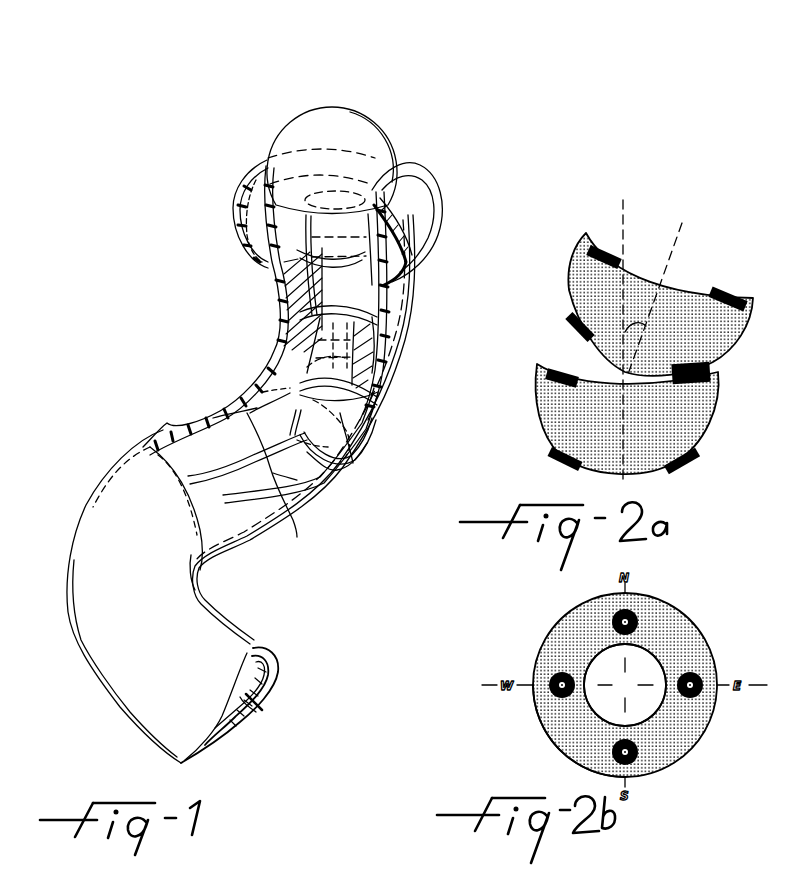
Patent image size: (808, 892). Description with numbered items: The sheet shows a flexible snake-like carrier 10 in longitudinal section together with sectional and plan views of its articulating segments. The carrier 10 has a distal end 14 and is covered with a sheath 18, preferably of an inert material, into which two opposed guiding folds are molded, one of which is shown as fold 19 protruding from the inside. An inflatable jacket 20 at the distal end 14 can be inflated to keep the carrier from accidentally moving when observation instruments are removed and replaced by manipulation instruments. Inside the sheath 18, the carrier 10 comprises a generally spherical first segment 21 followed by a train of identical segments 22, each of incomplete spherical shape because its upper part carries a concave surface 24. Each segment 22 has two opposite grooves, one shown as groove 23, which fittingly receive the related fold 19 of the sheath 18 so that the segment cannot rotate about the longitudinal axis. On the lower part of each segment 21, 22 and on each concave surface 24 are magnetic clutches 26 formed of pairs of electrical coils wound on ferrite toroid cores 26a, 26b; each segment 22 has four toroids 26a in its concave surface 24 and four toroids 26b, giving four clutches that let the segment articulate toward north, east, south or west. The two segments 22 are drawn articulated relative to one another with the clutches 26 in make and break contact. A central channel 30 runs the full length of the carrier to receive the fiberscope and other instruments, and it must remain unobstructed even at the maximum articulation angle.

In FIG. 1, the carrier 10 is at (180, 352).
In FIG. 1, the distal end 14 is at (262, 156).
In FIG. 1, the sheath 18 is at (250, 640).
In FIG. 1, the guiding fold 19 is at (242, 704).
In FIG. 1, the inflatable jacket 20 is at (427, 193).
In FIG. 1, the first segment 21 is at (366, 135).
In FIG. 1, the segment 22 is at (272, 378).
In FIG. 2A, the segment 22 is at (745, 333).
In FIG. 2B, the segment 22 is at (708, 728).
In FIG. 1, the groove 23 is at (292, 257).
In FIG. 2B, the concave surface 24 is at (590, 752).
In FIG. 2A, the magnetic clutch 26 is at (718, 375).
In FIG. 2A, the toroid 26a is at (612, 254).
In FIG. 2B, the toroid 26a is at (640, 614).
In FIG. 2A, the toroid 26b is at (572, 325).
In FIG. 2B, the central channel 30 is at (598, 703).